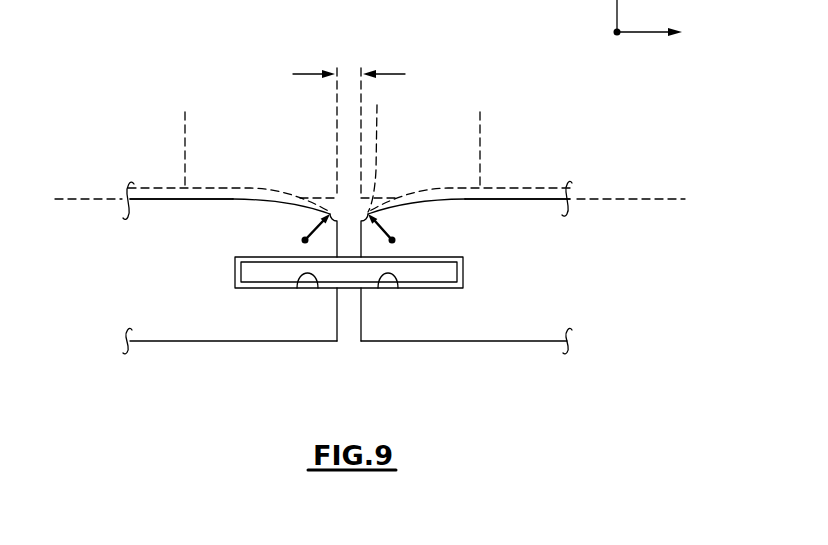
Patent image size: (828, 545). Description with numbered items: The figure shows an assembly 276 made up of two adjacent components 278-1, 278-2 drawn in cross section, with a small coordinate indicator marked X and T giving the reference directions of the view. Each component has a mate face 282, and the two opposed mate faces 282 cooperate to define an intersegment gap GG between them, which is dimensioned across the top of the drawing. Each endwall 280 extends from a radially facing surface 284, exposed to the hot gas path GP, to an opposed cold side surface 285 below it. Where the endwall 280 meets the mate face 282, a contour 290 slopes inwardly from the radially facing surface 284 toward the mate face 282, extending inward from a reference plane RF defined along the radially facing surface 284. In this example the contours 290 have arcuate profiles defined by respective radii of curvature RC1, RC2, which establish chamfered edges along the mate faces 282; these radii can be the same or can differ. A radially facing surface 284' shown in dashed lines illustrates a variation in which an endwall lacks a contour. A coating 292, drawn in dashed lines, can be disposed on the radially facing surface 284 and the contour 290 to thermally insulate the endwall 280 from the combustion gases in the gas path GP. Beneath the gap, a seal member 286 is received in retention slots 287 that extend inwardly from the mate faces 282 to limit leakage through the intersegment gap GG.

The assembly 276 is at (113, 86).
The first adjacent component 278-1 is at (150, 217).
The second adjacent component 278-2 is at (548, 217).
The endwall 280 is at (233, 230).
The mate face 282 is at (338, 318).
The radially facing surface 284 is at (332, 157).
The radially facing surface lacking a contour 284' is at (404, 148).
The cold side surface 285 is at (178, 342).
The seal member 286 is at (255, 288).
The retention slot 287 is at (297, 288).
The contour 290 is at (306, 202).
The coating 292 is at (185, 112).
The reference plane RF is at (350, 198).
The intersegment gap GG is at (313, 74).
The gas path GP is at (366, 33).
The first radius of curvature RC1 is at (305, 238).
The second radius of curvature RC2 is at (395, 238).
The radial axis X is at (617, 34).
The tangential axis T is at (657, 24).